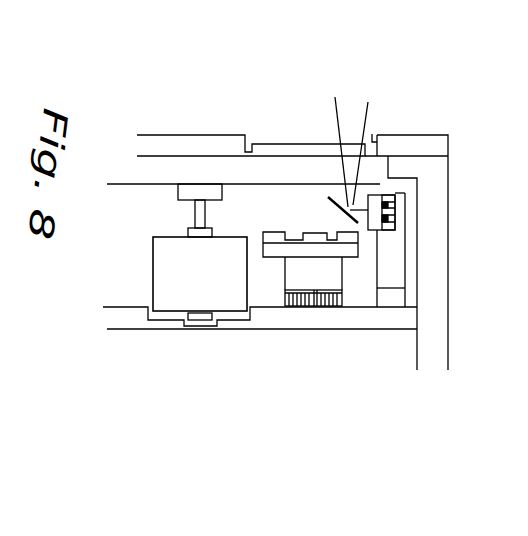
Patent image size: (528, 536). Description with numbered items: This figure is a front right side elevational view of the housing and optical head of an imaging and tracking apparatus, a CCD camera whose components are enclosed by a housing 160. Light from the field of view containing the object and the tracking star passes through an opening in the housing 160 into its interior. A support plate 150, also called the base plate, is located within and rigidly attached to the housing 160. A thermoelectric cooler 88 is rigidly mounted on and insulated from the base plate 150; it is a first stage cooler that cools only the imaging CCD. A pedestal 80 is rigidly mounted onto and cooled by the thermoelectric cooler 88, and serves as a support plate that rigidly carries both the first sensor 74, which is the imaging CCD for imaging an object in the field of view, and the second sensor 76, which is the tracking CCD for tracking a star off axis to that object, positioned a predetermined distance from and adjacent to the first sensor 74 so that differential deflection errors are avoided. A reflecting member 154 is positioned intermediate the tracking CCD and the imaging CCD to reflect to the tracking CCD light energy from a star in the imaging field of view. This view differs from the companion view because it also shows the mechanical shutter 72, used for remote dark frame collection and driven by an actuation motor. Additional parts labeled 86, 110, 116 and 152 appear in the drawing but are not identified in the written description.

The shutter 72 is at (130, 183).
The first sensor 74 is at (273, 248).
The second sensor 76 is at (374, 204).
The pedestal 80 is at (331, 276).
The gear 86 is at (319, 306).
The thermoelectric cooler 88 is at (395, 227).
The motor 110 is at (176, 295).
The upper plate 116 is at (258, 146).
The support plate 150 is at (411, 312).
The lip 152 is at (372, 134).
The reflecting member 154 is at (350, 208).
The housing 160 is at (448, 206).